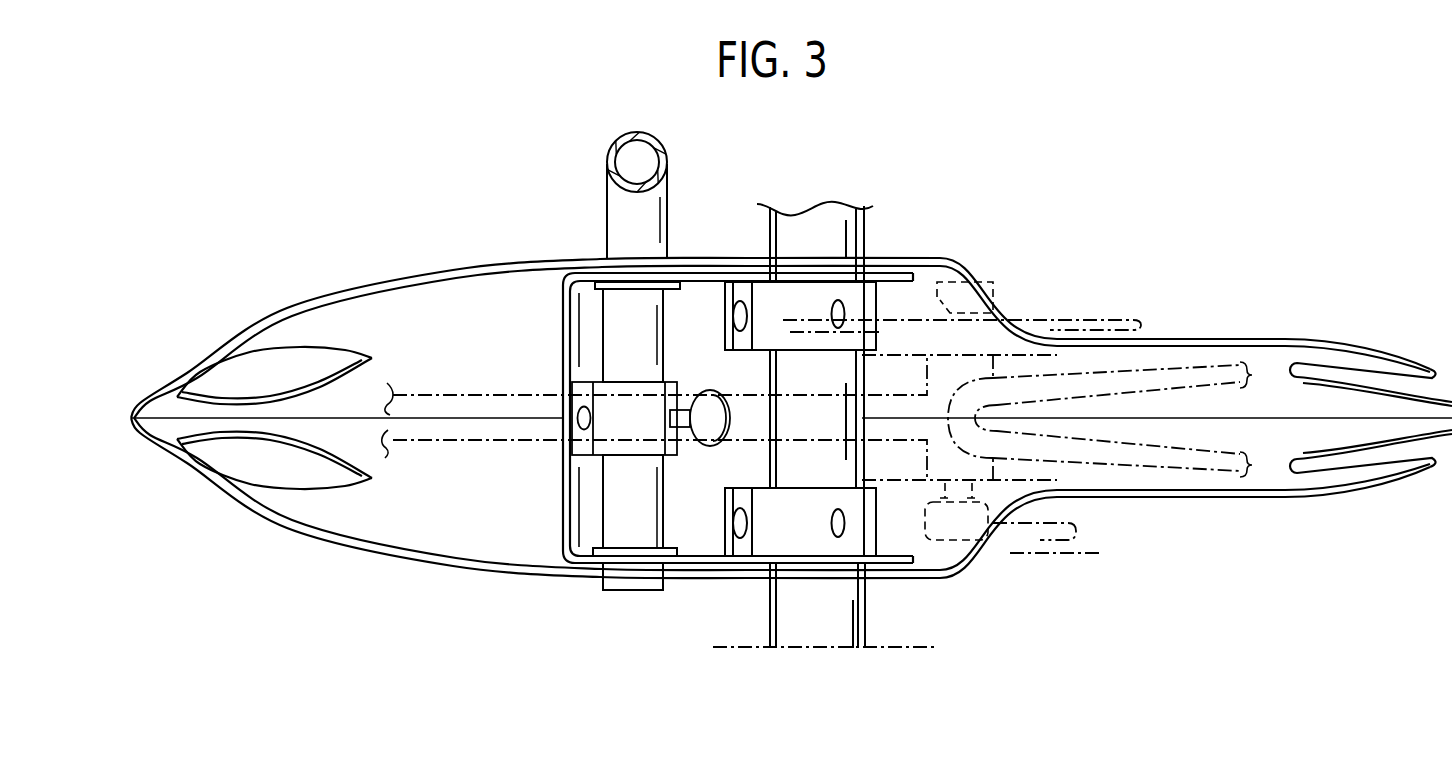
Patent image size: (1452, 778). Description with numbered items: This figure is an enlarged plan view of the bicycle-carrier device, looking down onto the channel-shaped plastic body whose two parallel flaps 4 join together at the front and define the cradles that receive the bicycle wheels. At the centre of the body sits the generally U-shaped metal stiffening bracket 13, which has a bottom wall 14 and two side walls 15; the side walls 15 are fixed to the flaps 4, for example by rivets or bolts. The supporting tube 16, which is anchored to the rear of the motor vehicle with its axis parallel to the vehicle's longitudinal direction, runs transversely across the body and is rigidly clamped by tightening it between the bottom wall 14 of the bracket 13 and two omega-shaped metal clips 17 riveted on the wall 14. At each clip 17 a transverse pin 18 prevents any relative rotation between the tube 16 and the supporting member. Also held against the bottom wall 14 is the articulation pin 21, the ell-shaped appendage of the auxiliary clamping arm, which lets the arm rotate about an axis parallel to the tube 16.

The flaps 4 is at (498, 260).
The stiffening bracket 13 is at (545, 489).
The bottom wall 14 is at (563, 328).
The side walls 15 is at (697, 272).
The supporting tube 16 is at (850, 233).
The omega-shaped metal clips 17 is at (883, 307).
The transverse pin 18 is at (836, 313).
The articulation pin 21 is at (622, 295).